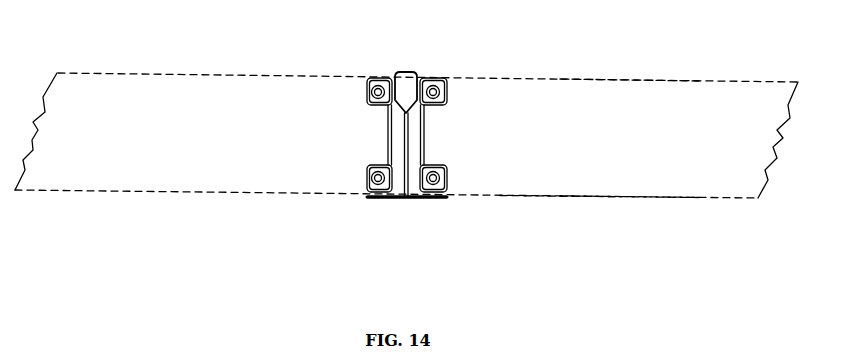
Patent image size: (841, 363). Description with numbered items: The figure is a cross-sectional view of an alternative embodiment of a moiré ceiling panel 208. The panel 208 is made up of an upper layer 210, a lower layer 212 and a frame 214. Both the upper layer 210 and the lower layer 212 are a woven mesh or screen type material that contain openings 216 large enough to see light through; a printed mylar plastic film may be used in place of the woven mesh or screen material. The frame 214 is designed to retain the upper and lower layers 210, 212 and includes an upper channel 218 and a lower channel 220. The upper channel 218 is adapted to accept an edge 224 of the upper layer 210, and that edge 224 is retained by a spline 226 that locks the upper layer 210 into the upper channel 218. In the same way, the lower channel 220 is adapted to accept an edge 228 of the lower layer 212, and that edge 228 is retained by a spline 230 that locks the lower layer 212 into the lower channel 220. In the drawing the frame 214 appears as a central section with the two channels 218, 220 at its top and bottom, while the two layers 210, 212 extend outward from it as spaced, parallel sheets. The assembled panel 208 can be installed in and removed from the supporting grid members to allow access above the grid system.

The moiré ceiling panel 208 is at (158, 230).
The upper layer 210 is at (563, 77).
The lower layer 212 is at (560, 198).
The frame 214 is at (420, 142).
The openings 216 is at (634, 82).
The upper channel 218 is at (437, 76).
The lower channel 220 is at (447, 192).
The edge 224 is at (467, 76).
The spline 226 is at (410, 71).
The edge 228 is at (470, 195).
The spline 230 is at (417, 190).